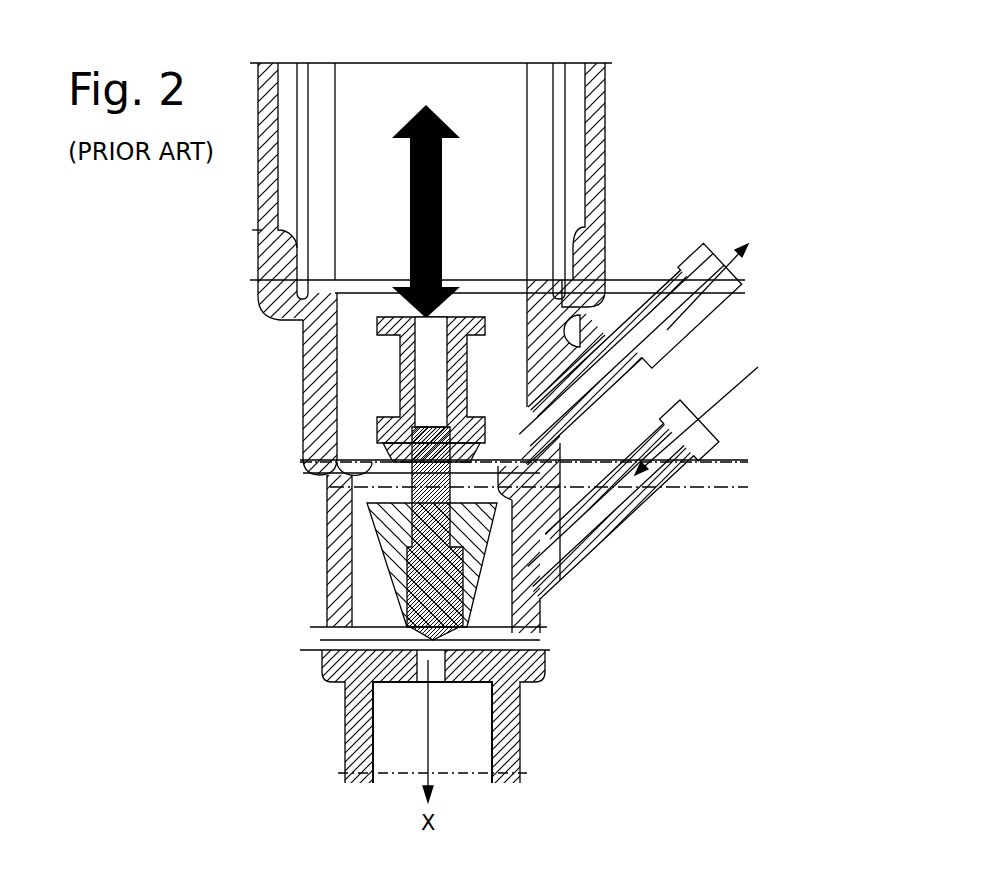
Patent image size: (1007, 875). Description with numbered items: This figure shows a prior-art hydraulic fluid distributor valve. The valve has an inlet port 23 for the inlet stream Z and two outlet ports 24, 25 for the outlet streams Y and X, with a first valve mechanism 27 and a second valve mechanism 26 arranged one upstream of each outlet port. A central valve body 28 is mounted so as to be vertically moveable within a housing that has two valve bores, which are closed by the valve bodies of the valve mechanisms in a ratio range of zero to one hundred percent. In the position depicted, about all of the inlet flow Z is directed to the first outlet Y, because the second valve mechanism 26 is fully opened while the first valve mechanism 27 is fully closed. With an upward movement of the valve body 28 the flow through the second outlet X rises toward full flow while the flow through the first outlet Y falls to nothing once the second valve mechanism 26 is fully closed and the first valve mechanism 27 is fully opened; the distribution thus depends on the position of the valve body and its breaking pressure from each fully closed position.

The inlet port 23 is at (603, 500).
The outlet port 24 is at (673, 328).
The outlet port 25 is at (455, 735).
The second valve mechanism 26 is at (372, 475).
The first valve mechanism 27 is at (395, 650).
The central valve body 28 is at (398, 433).